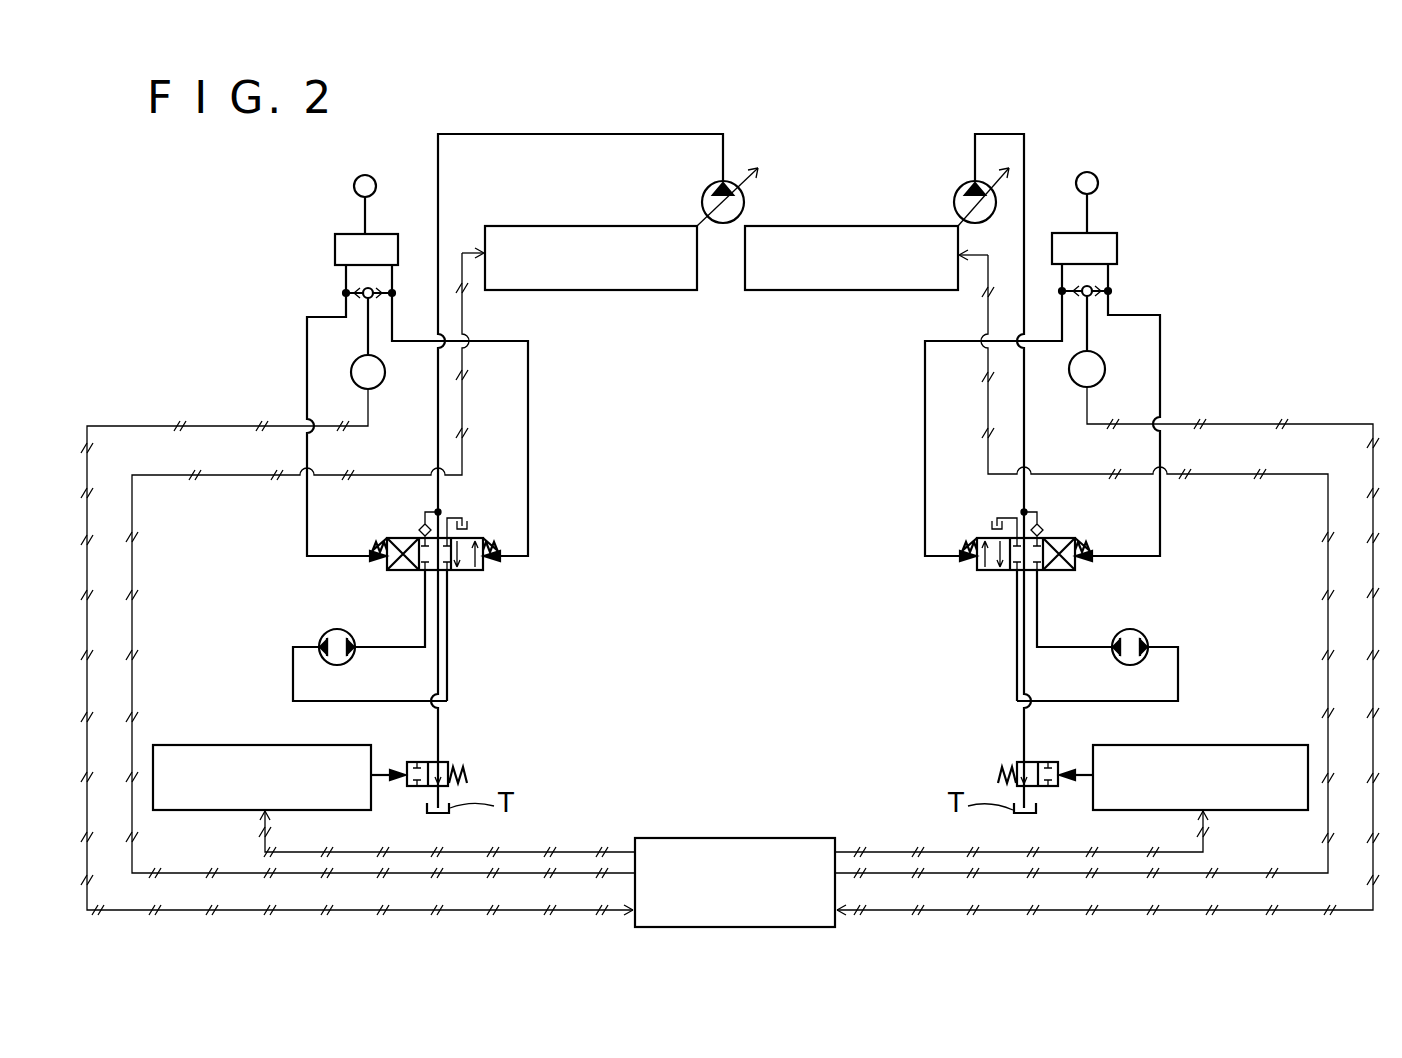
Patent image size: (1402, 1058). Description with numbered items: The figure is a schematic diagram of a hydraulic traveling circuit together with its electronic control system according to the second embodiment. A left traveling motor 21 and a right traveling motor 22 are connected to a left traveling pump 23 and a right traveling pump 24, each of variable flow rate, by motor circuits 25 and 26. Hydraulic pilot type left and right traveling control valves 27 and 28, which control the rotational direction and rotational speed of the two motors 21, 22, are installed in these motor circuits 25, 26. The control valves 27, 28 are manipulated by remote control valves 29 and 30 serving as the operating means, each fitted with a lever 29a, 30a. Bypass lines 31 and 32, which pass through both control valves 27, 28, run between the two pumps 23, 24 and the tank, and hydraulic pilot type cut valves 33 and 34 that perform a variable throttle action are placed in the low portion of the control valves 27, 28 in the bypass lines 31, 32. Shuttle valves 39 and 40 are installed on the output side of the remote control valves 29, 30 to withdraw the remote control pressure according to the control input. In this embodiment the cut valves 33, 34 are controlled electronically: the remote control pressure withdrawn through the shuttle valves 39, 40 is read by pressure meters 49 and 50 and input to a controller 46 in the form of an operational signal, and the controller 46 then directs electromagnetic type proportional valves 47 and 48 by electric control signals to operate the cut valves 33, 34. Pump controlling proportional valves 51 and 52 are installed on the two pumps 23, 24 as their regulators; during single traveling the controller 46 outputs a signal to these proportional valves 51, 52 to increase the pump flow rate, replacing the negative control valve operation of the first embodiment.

The left traveling motor 21 is at (329, 632).
The right traveling motor 22 is at (1139, 630).
The left traveling pump 23 is at (703, 195).
The right traveling pump 24 is at (957, 194).
The motor circuit 25 is at (440, 407).
The motor circuit 26 is at (1022, 412).
The left traveling control valve 27 is at (470, 571).
The right traveling control valve 28 is at (1000, 572).
The remote control valve 29 is at (335, 244).
The lever 29a is at (363, 209).
The remote control valve 30 is at (1117, 248).
The lever 30a is at (1089, 212).
The bypass line 31 is at (448, 666).
The bypass line 32 is at (1016, 665).
The cut valve 33 is at (449, 763).
The cut valve 34 is at (1017, 760).
The shuttle valve 39 is at (346, 294).
The shuttle valve 40 is at (1108, 292).
The controller 46 is at (806, 838).
The electromagnetic type proportional valve 47 is at (185, 745).
The electromagnetic type proportional valve 48 is at (1282, 745).
The pressure meter 49 is at (381, 384).
The pressure meter 50 is at (1074, 382).
The pump controlling proportional valve 51 is at (641, 291).
The pump controlling proportional valve 52 is at (816, 291).